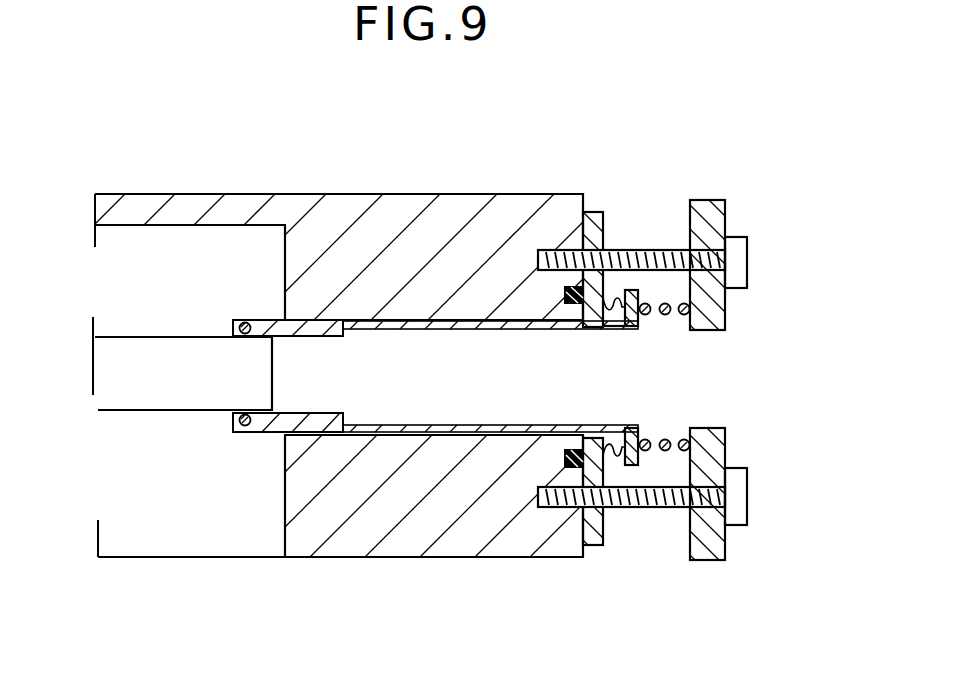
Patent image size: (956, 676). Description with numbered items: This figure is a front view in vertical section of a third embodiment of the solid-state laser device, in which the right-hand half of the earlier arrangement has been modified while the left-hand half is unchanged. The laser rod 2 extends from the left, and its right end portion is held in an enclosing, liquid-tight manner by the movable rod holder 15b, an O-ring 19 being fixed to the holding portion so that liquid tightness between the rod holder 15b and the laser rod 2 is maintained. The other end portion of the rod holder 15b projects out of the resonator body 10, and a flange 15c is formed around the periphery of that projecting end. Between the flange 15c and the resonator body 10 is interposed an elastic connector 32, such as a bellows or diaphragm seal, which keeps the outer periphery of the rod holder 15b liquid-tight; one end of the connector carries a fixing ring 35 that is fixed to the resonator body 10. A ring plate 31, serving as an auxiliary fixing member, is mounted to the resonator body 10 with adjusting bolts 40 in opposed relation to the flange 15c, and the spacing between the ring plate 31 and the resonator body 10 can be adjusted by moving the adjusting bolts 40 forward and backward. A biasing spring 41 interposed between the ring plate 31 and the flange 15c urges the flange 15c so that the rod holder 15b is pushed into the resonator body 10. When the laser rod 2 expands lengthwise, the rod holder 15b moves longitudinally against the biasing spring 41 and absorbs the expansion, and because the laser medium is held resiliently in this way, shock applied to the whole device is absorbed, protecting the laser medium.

The laser rod 2 is at (175, 360).
The resonator body 10 is at (412, 222).
The rod holder 15b is at (463, 322).
The flange 15c is at (637, 290).
The O-ring 19 is at (245, 327).
The ring plate 31 is at (707, 215).
The elastic connector 32 is at (608, 535).
The fixing ring 35 is at (598, 214).
The adjusting bolts 40 is at (745, 256).
The biasing spring 41 is at (660, 452).